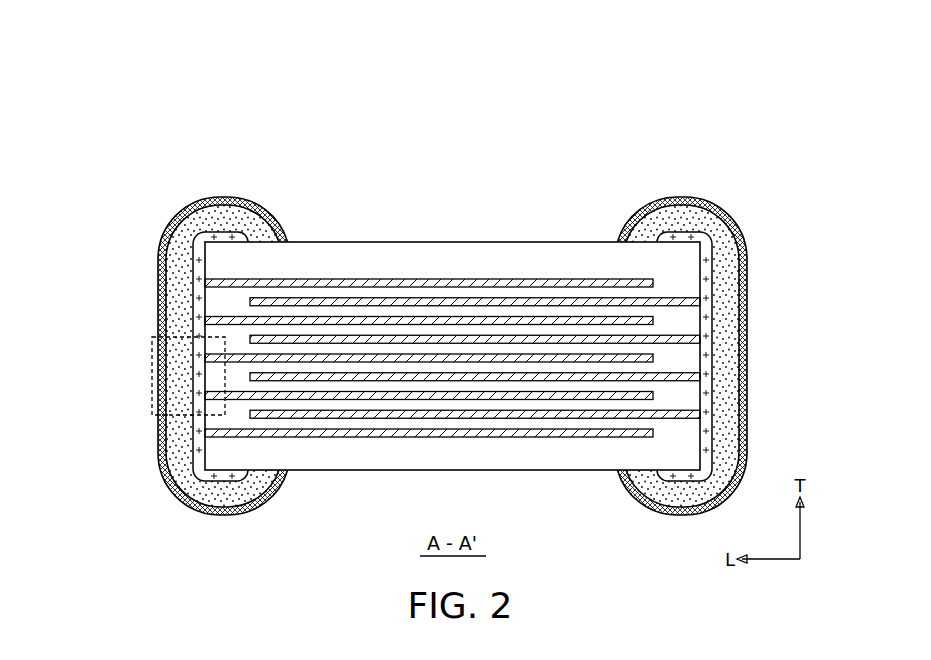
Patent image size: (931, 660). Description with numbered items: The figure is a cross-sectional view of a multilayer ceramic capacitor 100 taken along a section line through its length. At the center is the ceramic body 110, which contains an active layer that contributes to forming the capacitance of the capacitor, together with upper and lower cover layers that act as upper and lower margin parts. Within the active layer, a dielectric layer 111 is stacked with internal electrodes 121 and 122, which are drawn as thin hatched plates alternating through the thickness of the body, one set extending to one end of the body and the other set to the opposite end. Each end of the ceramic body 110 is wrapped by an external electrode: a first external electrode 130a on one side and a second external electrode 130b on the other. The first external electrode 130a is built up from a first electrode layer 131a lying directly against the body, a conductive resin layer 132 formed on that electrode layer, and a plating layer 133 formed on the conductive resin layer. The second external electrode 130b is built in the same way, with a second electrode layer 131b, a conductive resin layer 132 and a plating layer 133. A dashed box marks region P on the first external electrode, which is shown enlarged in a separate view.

The multilayer ceramic capacitor 100 is at (413, 75).
The ceramic body 110 is at (502, 243).
The dielectric layer 111 is at (352, 293).
The internal electrode 121 is at (410, 279).
The internal electrode 122 is at (465, 300).
The first external electrode 130a is at (142, 148).
The second external electrode 130b is at (770, 148).
The first electrode layer 131a is at (243, 233).
The second electrode layer 131b is at (660, 233).
The conductive resin layer 132 is at (225, 208).
The plating layer 133 is at (177, 208).
The region P is at (152, 375).